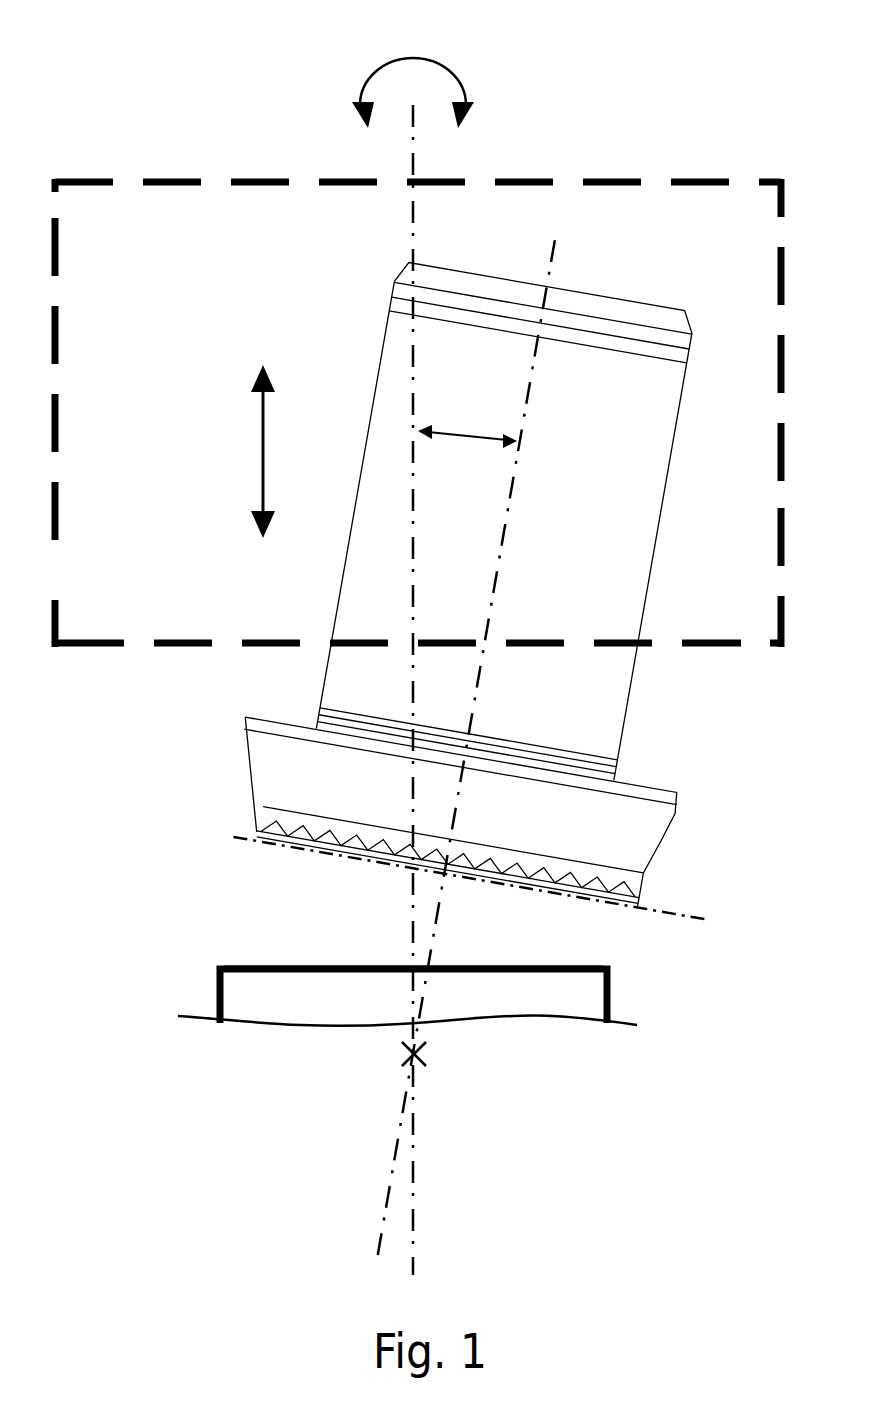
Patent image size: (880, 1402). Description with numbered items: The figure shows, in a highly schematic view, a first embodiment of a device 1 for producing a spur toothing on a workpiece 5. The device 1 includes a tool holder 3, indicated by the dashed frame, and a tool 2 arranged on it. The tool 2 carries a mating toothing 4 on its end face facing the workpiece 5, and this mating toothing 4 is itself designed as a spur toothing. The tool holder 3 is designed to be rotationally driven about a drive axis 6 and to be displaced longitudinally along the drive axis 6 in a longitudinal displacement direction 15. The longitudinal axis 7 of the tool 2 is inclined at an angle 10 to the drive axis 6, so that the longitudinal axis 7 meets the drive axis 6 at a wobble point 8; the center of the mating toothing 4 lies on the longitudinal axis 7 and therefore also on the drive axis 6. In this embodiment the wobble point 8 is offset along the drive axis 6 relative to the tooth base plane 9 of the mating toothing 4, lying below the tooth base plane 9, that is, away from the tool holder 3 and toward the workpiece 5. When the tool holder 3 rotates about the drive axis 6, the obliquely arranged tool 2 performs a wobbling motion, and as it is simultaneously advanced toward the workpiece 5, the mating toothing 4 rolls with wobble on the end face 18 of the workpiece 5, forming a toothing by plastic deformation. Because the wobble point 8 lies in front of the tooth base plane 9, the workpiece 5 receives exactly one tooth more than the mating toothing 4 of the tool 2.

The device 1 is at (214, 104).
The tool 2 is at (624, 268).
The tool holder 3 is at (711, 182).
The mating toothing 4 is at (590, 920).
The workpiece 5 is at (237, 995).
The drive axis 6 is at (413, 228).
The longitudinal axis 7 is at (508, 532).
The wobble point 8 is at (418, 1053).
The tooth base plane 9 is at (233, 838).
The angle 10 is at (467, 432).
The longitudinal displacement direction 15 is at (263, 437).
The end face 18 is at (299, 958).